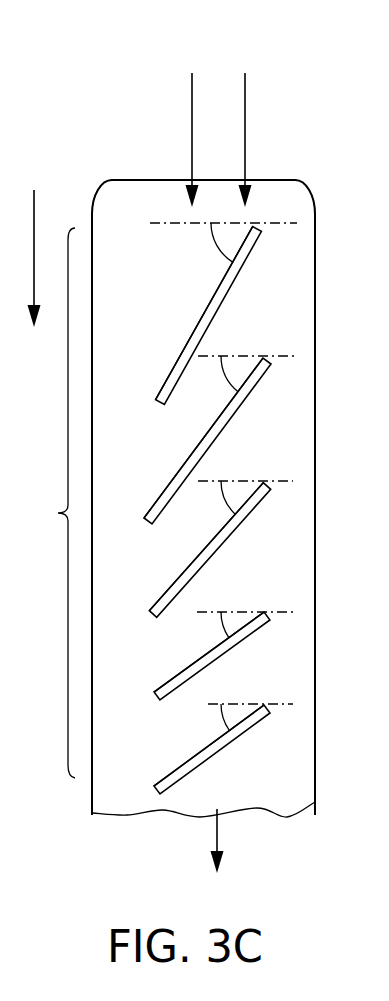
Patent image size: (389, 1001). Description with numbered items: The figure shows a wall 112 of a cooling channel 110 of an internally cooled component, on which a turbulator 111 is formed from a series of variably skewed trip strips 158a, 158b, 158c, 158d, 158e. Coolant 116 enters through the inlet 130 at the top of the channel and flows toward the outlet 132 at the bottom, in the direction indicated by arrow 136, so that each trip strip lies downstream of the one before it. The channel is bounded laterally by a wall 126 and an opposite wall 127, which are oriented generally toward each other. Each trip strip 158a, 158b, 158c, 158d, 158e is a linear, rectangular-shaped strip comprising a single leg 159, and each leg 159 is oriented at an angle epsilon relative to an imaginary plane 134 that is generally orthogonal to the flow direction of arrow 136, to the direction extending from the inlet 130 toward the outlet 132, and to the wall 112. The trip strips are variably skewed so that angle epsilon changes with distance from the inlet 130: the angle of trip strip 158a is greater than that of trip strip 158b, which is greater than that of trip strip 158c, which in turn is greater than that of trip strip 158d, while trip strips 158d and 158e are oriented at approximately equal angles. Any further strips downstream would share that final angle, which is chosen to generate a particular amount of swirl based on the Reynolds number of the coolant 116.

The cooling channel 110 is at (140, 186).
The turbulator 111 is at (52, 503).
The wall 112 is at (153, 290).
The coolant 116 is at (218, 129).
The wall 126 is at (93, 790).
The wall 127 is at (312, 790).
The inlet 130 is at (268, 187).
The outlet 132 is at (217, 855).
The imaginary plane 134 is at (294, 223).
The arrow 136 is at (35, 246).
The trip strip 158a is at (253, 280).
The trip strip 158b is at (256, 408).
The trip strip 158c is at (259, 523).
The trip strip 158d is at (268, 644).
The trip strip 158e is at (258, 747).
The leg 159 is at (188, 342).